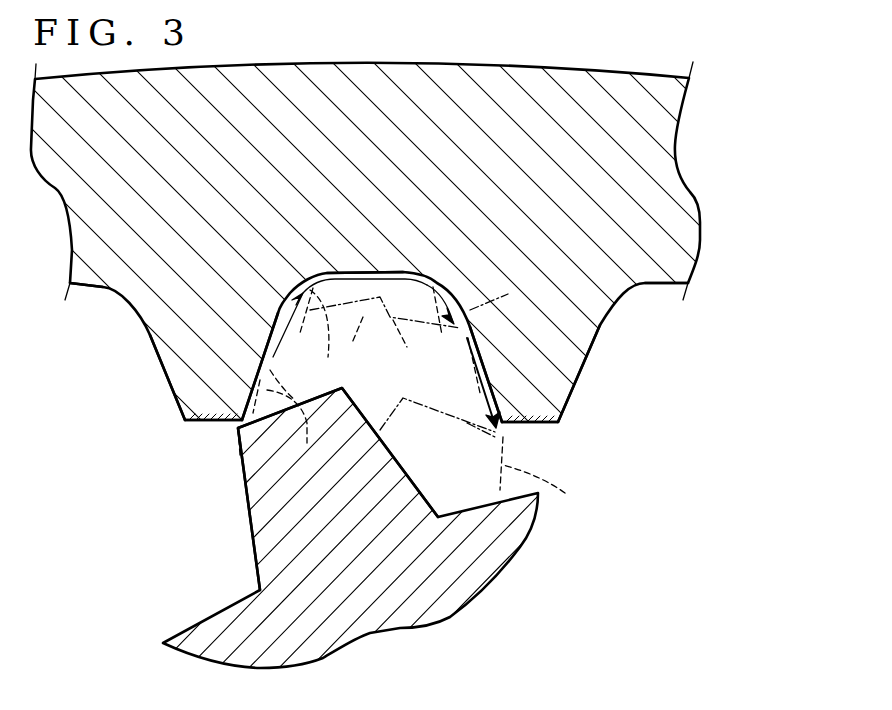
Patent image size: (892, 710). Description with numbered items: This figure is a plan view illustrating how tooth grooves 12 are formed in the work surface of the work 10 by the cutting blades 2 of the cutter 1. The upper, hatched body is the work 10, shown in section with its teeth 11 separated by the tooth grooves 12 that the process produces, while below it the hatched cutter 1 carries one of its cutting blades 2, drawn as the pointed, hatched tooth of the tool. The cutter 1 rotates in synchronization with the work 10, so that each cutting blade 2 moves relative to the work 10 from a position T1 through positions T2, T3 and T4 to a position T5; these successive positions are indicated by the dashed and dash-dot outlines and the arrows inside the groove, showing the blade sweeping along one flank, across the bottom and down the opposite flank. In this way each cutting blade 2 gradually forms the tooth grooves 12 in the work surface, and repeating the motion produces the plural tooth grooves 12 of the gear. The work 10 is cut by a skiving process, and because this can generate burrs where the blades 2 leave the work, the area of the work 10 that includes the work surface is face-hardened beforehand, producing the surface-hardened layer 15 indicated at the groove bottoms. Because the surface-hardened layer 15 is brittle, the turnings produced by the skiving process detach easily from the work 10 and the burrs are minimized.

The cutter 1 is at (496, 600).
The cutting blades 2 is at (282, 505).
The work 10 is at (692, 153).
The tooth 11 is at (192, 353).
The tooth grooves 12 is at (102, 288).
The surface-hardened layer 15 is at (205, 422).
The position T1 is at (242, 455).
The position T2 is at (295, 435).
The position T3 is at (306, 379).
The position T4 is at (506, 295).
The position T5 is at (551, 494).